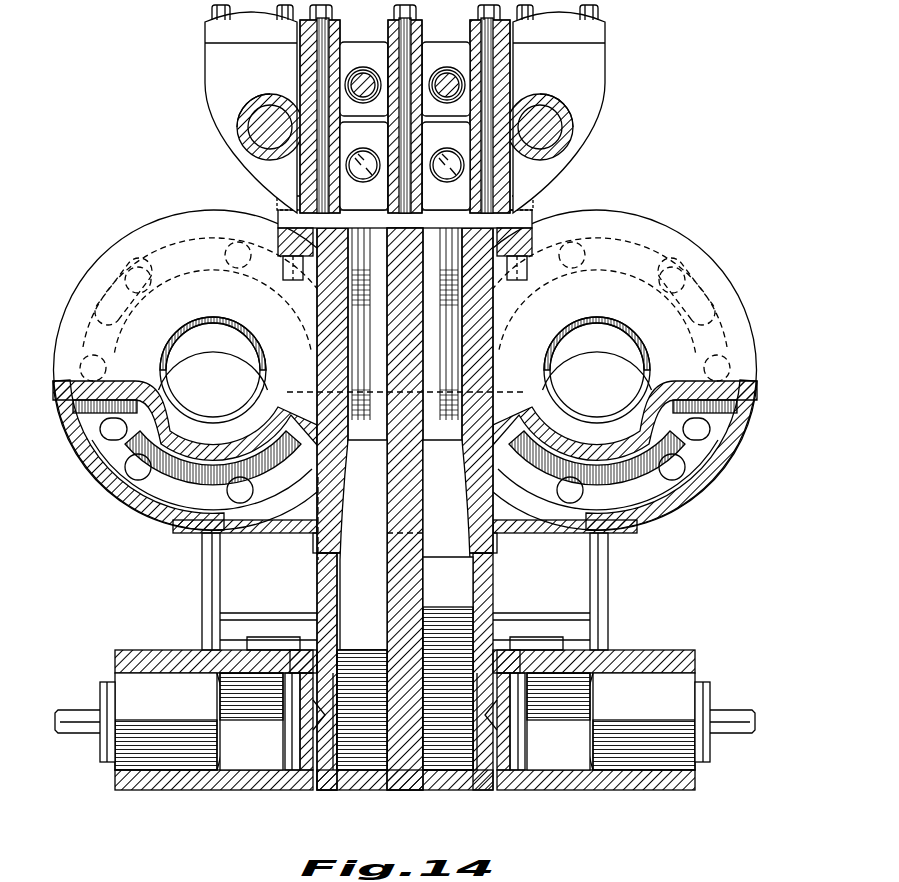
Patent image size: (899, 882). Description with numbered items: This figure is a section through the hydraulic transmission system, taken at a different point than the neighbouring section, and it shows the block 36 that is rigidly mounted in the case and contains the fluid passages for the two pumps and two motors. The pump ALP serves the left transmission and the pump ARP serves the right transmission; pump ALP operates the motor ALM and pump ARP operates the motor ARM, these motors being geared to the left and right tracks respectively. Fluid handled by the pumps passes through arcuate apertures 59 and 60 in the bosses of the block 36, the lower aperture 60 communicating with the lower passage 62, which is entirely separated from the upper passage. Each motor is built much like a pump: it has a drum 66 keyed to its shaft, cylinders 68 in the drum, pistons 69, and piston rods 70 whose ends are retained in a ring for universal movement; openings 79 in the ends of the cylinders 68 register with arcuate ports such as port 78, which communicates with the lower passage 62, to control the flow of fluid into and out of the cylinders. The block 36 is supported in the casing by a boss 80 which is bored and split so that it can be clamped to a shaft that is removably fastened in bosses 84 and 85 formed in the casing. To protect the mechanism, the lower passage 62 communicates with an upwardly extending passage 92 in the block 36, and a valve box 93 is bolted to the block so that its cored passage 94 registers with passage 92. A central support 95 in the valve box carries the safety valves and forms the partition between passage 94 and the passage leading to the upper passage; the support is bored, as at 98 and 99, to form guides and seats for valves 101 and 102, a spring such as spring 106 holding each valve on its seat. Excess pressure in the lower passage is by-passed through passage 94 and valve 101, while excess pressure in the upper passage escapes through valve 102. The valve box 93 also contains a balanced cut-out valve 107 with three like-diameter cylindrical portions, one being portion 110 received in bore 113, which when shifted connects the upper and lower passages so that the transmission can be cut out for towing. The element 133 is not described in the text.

The cap 133 is at (228, 36).
The valve 102 is at (358, 78).
The spring 106 is at (348, 90).
The cored passage 94 is at (362, 47).
The bore 99 is at (436, 66).
The bore 113 is at (253, 118).
The balanced valve 107 is at (268, 128).
The cylindrical portion 110 is at (270, 130).
The valve box 93 is at (585, 99).
The seat 98 is at (405, 154).
The valve 101 is at (425, 168).
The central support 95 is at (428, 172).
The arcuate aperture 59 is at (160, 252).
The block 36 is at (330, 292).
The passage 92 is at (363, 355).
The pump ALP is at (112, 442).
The pump ARP is at (697, 442).
The lower passage 62 is at (360, 535).
The arcuate aperture 60 is at (172, 500).
The boss 85 is at (205, 585).
The boss 84 is at (600, 585).
The boss 80 is at (497, 650).
The motor ALM is at (125, 658).
The motor ARM is at (682, 660).
The piston 69 is at (140, 693).
The piston rod 70 is at (87, 733).
The opening 79 is at (308, 727).
The drum 66 is at (128, 783).
The cylinder 68 is at (277, 760).
The arcuate port 78 is at (333, 735).